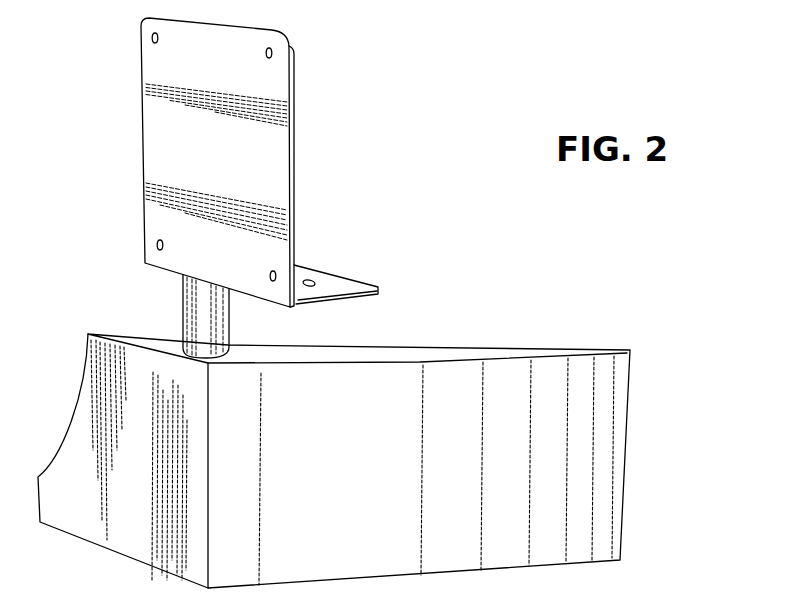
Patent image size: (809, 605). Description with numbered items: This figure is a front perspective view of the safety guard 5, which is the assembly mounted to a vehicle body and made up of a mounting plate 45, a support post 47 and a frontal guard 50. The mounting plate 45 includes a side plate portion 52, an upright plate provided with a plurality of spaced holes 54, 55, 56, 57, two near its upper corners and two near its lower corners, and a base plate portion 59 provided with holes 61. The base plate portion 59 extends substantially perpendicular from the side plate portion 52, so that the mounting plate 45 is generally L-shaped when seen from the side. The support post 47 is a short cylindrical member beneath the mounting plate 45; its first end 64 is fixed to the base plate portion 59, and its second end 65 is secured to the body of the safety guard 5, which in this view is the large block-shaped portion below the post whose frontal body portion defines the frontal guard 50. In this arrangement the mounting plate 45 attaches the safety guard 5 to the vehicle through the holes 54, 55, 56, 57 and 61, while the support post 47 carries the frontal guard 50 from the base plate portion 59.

The safety guard 5 is at (396, 121).
The mounting plate 45 is at (117, 124).
The support post 47 is at (172, 299).
The frontal guard 50 is at (650, 354).
The side plate portion 52 is at (275, 155).
The hole 54 is at (273, 52).
The hole 55 is at (152, 38).
The hole 56 is at (157, 245).
The hole 57 is at (277, 274).
The base plate portion 59 is at (334, 290).
The hole 61 is at (313, 282).
The first end 64 is at (226, 289).
The second end 65 is at (183, 335).